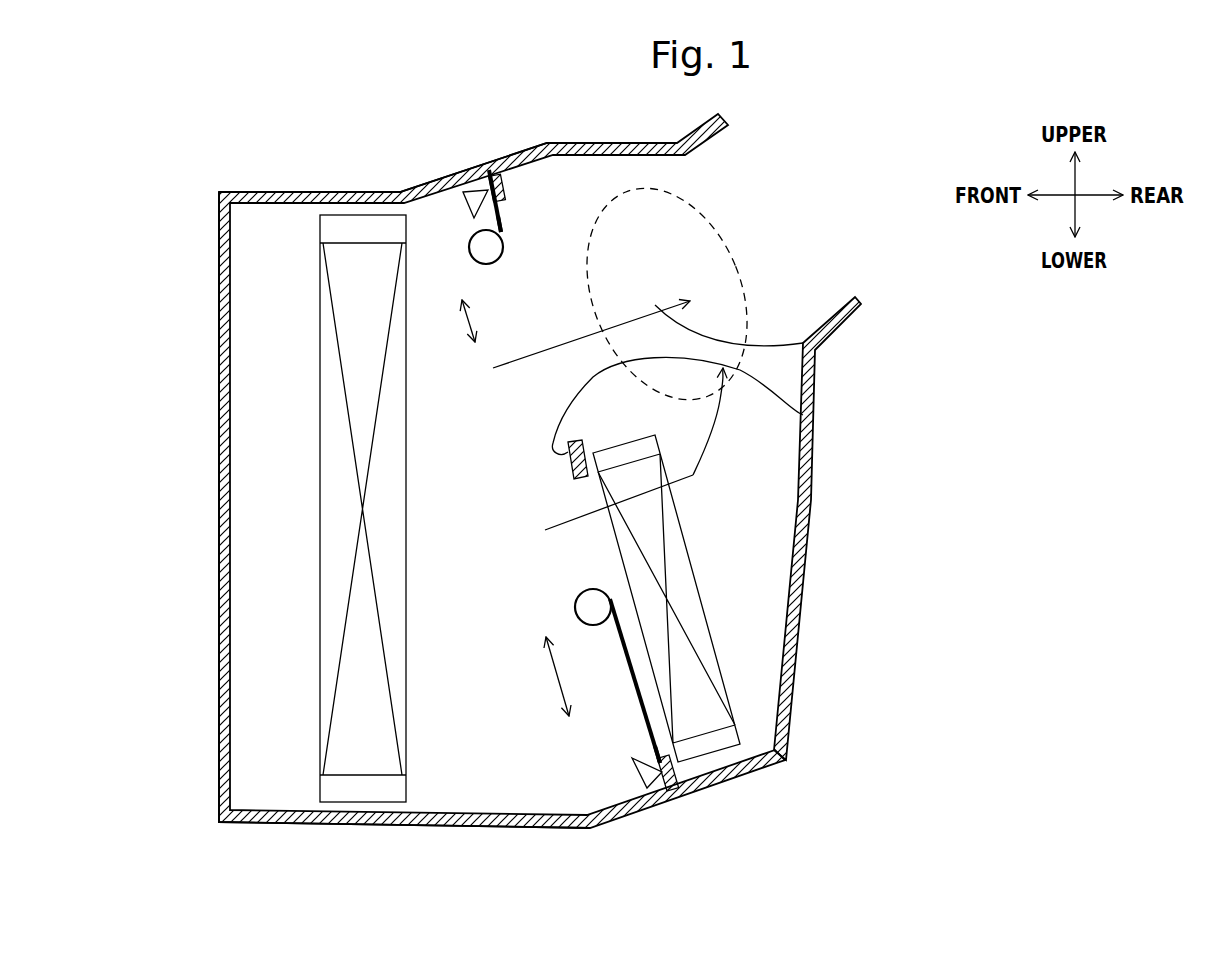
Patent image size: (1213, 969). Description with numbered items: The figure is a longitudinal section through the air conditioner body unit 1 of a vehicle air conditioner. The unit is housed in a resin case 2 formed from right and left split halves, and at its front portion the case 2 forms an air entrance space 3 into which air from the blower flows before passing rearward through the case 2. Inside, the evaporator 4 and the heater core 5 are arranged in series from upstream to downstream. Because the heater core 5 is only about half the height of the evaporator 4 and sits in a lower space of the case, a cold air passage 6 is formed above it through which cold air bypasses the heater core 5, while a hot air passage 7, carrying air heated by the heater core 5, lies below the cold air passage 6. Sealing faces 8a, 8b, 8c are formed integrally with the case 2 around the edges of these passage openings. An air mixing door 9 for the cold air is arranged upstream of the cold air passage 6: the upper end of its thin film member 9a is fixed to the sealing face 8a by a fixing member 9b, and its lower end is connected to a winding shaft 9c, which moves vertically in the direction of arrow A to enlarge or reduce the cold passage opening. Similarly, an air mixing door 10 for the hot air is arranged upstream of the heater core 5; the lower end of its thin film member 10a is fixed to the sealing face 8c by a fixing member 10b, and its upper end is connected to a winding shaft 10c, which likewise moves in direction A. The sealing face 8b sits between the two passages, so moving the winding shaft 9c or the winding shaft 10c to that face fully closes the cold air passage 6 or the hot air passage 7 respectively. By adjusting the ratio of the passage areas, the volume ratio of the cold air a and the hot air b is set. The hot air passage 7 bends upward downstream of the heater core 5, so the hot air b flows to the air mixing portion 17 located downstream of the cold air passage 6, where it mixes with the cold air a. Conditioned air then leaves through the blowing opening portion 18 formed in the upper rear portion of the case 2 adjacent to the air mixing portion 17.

The air conditioner body unit 1 is at (436, 168).
The case 2 is at (355, 191).
The air entrance space 3 is at (270, 258).
The evaporator 4 is at (348, 258).
The heater core 5 is at (685, 588).
The cold air passage 6 is at (543, 282).
The hot air passage 7 is at (637, 645).
The sealing face 8a is at (492, 176).
The sealing face 8b is at (803, 415).
The sealing face 8c is at (663, 795).
The air mixing door for the cold air 9 is at (509, 209).
The thin film member 9a is at (507, 222).
The fixing member 9b is at (476, 186).
The winding shaft 9c is at (480, 253).
The air mixing door for the hot air 10 is at (628, 712).
The thin film member 10a is at (633, 757).
The fixing member 10b is at (656, 778).
The winding shaft 10c is at (590, 605).
The air mixing portion 17 is at (747, 295).
The blowing opening portion 18 is at (753, 190).
The cold air a is at (805, 347).
The hot air b is at (693, 475).
The arrow A is at (460, 325).